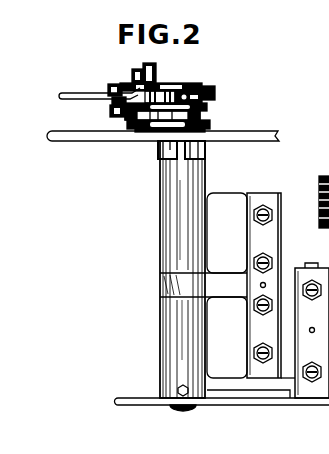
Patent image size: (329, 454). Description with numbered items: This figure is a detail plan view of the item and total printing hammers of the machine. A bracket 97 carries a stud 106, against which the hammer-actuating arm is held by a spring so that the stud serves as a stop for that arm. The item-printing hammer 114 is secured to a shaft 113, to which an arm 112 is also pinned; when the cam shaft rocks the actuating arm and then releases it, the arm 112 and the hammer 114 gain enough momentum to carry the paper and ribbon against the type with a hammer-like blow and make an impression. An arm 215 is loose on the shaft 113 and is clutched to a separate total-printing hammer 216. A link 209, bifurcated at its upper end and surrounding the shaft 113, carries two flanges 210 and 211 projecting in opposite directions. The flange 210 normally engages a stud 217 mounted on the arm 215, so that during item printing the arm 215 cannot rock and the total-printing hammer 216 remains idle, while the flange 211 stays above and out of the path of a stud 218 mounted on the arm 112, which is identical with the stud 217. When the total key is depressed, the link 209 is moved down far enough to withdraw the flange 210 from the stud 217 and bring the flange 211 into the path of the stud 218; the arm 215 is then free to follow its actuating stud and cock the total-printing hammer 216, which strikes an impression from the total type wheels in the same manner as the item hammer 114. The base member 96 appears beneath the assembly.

The base plate 96 is at (130, 398).
The bracket 97 is at (257, 134).
The stud 106 is at (142, 64).
The arm 112 is at (208, 86).
The shaft 113 is at (182, 85).
The printing hammer 114 is at (288, 396).
The link 209 is at (62, 96).
The flange 210 is at (126, 100).
The flange 211 is at (152, 90).
The arm 215 is at (208, 118).
The total-printing hammer 216 is at (244, 281).
The stud 217 is at (124, 110).
The stud 218 is at (120, 90).